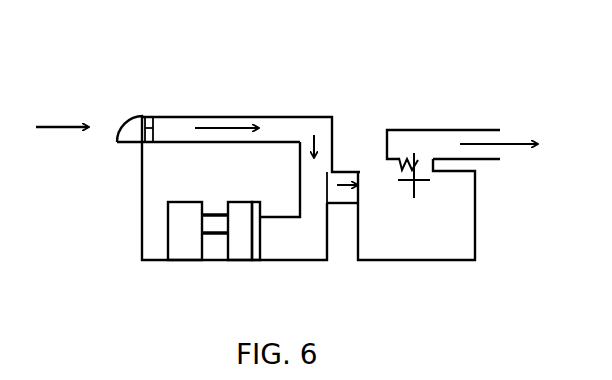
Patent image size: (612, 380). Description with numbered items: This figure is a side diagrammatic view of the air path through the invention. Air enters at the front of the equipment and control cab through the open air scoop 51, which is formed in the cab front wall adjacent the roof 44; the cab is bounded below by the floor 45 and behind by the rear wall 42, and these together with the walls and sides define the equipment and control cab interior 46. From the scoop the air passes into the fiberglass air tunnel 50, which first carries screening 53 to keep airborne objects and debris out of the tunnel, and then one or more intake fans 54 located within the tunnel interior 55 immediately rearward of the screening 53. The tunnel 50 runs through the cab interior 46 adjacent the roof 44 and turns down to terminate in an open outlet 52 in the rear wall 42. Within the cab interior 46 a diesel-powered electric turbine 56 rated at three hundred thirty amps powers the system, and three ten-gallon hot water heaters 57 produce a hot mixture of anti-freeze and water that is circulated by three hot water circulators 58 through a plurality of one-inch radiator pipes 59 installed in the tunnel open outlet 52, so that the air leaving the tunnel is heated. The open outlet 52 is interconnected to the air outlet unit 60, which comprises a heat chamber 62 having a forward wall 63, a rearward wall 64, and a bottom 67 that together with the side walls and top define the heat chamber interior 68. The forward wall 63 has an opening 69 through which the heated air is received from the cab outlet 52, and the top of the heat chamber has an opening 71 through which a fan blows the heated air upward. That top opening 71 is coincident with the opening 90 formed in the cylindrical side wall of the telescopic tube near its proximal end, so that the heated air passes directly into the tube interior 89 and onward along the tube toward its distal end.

The rear wall 42 is at (328, 233).
The roof 44 is at (303, 115).
The floor 45 is at (145, 252).
The equipment and control cab interior 46 is at (213, 180).
The fiberglass air tunnel 50 is at (180, 118).
The air scoop 51 is at (120, 130).
The open outlet 52 is at (325, 175).
The screening 53 is at (143, 115).
The intake fan 54 is at (147, 113).
The tunnel interior 55 is at (268, 117).
The diesel-powered electric turbine 56 is at (180, 248).
The hot water heater 57 is at (240, 255).
The hot water circulator 58 is at (255, 200).
The radiator pipe 59 is at (327, 200).
The air outlet unit 60 is at (447, 260).
The heat chamber 62 is at (467, 207).
The forward wall 63 is at (360, 237).
The rearward wall 64 is at (477, 242).
The bottom 67 is at (407, 258).
The heat chamber interior 68 is at (452, 182).
The opening 69 is at (360, 195).
The top opening 71 is at (405, 160).
The tube interior 89 is at (442, 138).
The opening 90 is at (423, 167).